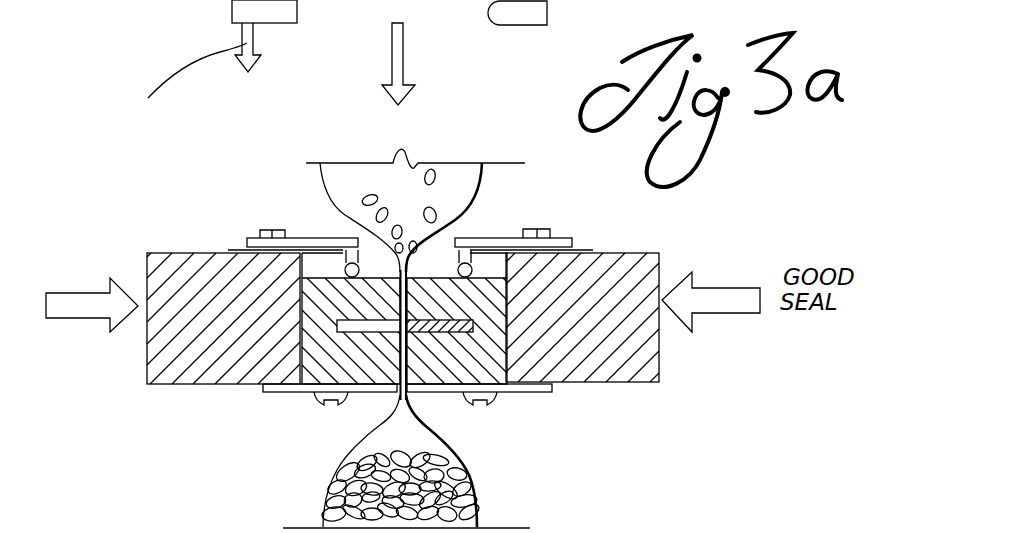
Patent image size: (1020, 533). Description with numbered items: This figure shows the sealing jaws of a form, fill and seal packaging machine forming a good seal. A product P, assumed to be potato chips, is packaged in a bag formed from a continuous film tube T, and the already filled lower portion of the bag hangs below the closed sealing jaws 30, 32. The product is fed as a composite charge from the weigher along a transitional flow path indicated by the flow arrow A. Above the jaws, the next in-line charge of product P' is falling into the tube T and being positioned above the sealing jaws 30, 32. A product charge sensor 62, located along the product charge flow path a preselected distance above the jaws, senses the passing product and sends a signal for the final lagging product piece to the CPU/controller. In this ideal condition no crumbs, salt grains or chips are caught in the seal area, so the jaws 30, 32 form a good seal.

The product charge sensor 62 is at (274, 13).
The flow arrow A is at (398, 70).
The continuous film tube T is at (292, 200).
The next in-line charge of product P' is at (454, 210).
The sealing jaw 30 is at (483, 358).
The sealing jaw 32 is at (322, 370).
The product P is at (422, 461).